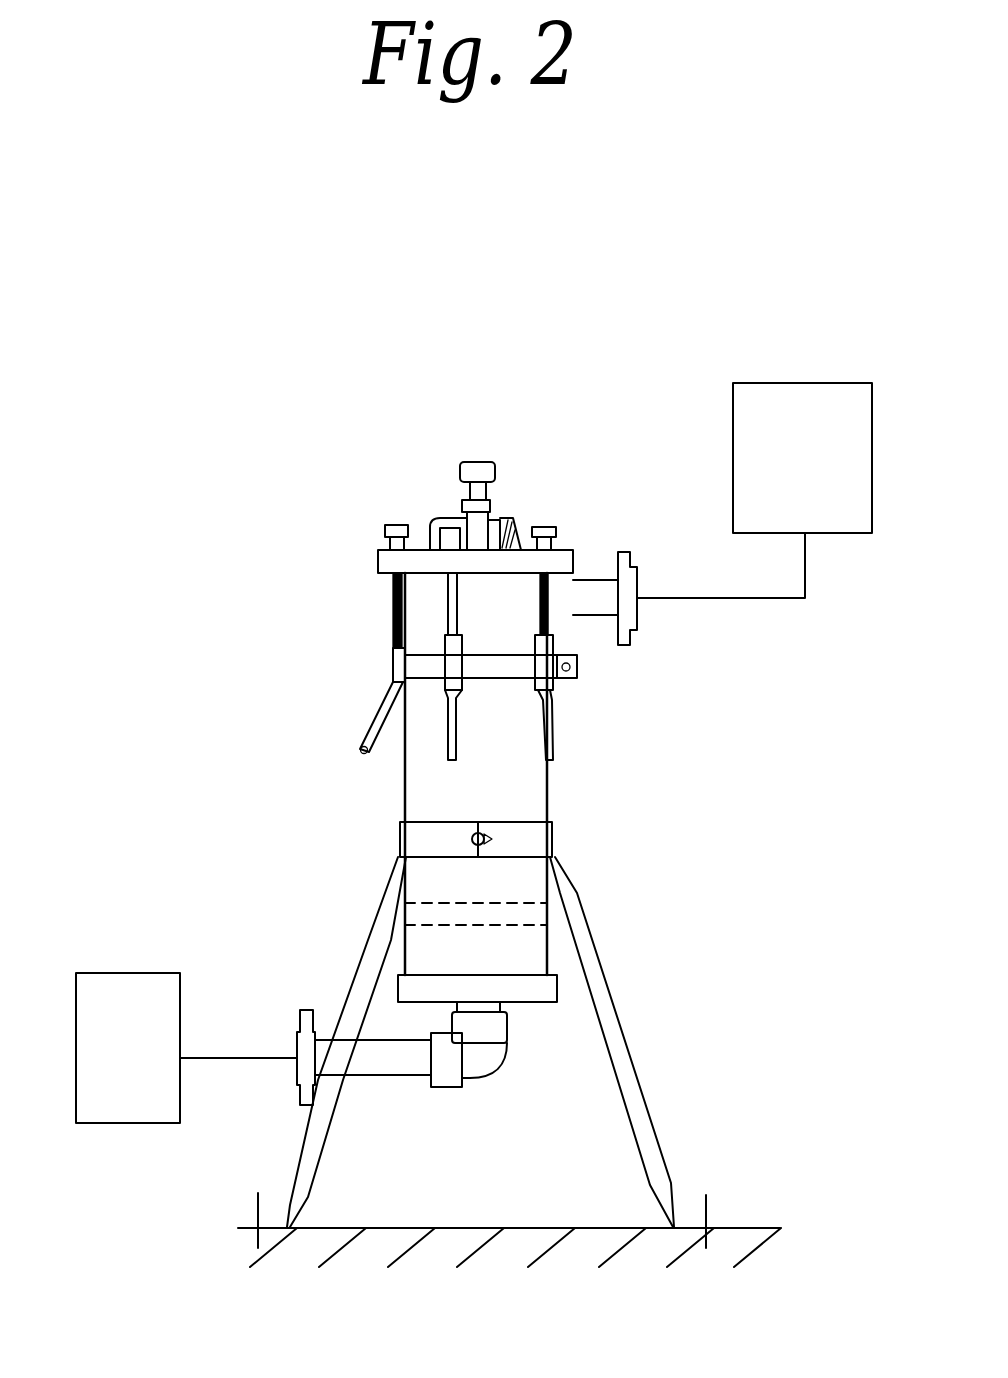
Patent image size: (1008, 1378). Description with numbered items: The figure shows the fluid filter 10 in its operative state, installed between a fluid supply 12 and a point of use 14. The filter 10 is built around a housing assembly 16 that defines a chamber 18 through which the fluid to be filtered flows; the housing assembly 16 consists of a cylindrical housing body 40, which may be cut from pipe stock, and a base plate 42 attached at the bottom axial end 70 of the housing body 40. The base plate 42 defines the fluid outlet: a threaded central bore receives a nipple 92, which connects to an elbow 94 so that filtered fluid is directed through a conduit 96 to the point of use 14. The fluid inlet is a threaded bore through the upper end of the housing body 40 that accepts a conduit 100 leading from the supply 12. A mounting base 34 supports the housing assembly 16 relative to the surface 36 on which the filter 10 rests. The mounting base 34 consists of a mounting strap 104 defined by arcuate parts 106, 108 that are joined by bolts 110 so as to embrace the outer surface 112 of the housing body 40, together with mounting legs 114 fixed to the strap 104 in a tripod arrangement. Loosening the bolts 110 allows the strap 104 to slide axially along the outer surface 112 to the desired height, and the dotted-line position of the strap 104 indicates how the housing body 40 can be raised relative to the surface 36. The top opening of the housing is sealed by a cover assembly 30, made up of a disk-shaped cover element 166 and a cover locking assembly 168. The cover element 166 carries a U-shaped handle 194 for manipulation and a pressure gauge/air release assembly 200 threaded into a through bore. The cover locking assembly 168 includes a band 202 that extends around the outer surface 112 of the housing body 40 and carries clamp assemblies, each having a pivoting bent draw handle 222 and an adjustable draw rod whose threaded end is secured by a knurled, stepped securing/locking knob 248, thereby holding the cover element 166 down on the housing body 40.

The fluid filter 10 is at (705, 813).
The supply 12 is at (754, 490).
The point of use 14 is at (186, 1048).
The housing assembly 16 is at (553, 810).
The chamber 18 is at (493, 788).
The cover assembly 30 is at (372, 530).
The mounting base 34 is at (657, 1095).
The surface 36 is at (448, 1226).
The housing body 40 is at (402, 786).
The base plate 42 is at (530, 1003).
The bottom axial end 70 is at (534, 973).
The nipple 92 is at (457, 1007).
The elbow 94 is at (470, 1063).
The conduit 96 is at (386, 1076).
The conduit 100 is at (599, 579).
The mounting strap 104 is at (417, 843).
The arcuate part 106 is at (533, 833).
The arcuate part 108 is at (402, 816).
The bolt 110 is at (482, 826).
The outer surface 112 is at (402, 757).
The mounting legs 114 is at (527, 1042).
The cover element 166 is at (420, 546).
The cover locking assembly 168 is at (390, 665).
The U-shaped handle 194 is at (515, 533).
The pressure gauge/air release assembly 200 is at (512, 470).
The band 202 is at (512, 663).
The draw handle 222 is at (382, 723).
The securing/locking knob 248 is at (492, 466).